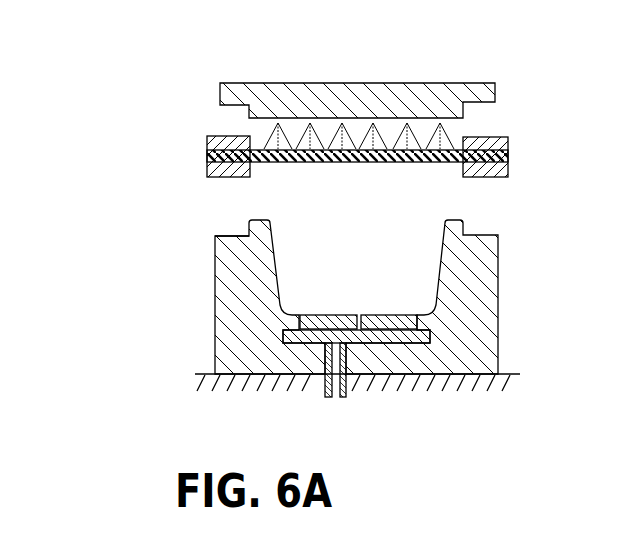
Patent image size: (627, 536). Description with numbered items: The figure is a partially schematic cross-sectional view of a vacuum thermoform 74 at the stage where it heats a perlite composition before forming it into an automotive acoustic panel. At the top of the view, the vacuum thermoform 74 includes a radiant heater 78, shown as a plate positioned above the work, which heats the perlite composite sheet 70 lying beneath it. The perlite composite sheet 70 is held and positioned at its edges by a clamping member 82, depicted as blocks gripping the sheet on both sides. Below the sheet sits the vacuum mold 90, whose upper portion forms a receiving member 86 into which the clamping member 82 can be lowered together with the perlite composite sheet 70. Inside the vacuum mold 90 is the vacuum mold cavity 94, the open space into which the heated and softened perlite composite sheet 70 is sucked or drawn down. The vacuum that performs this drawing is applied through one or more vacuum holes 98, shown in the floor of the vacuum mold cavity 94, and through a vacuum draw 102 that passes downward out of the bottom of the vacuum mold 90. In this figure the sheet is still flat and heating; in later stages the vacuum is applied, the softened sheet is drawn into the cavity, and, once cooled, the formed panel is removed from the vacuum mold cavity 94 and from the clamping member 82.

The perlite composite sheet 70 is at (450, 148).
The vacuum thermoform 74 is at (197, 119).
The radiant heater 78 is at (445, 97).
The clamping member 82 is at (207, 167).
The receiving member 86 is at (225, 234).
The vacuum mold 90 is at (240, 305).
The vacuum mold cavity 94 is at (363, 252).
The vacuum holes 98 is at (359, 306).
The vacuum draw 102 is at (339, 403).